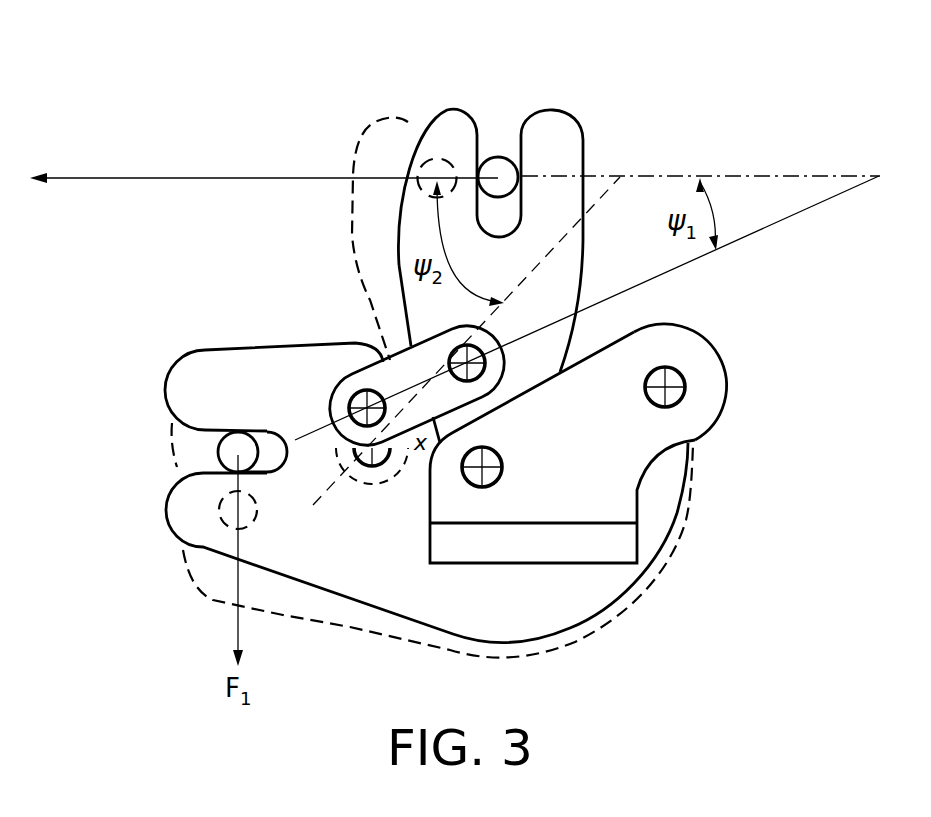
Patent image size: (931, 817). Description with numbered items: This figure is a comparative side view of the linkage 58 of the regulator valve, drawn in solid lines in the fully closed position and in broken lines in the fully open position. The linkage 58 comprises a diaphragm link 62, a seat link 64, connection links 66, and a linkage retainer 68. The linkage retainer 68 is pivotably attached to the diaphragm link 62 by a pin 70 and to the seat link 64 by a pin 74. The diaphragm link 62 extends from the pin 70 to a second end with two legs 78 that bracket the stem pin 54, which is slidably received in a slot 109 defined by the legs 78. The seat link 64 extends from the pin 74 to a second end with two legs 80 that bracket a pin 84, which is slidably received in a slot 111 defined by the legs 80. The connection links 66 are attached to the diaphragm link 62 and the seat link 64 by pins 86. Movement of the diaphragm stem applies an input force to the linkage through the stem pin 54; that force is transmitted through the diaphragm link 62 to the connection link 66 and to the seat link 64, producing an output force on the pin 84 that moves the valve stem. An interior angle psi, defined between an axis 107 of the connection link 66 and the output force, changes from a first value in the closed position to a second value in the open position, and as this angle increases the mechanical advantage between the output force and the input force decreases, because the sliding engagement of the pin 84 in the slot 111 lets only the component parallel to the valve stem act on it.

The stem pin 54 is at (218, 450).
The linkage 58 is at (267, 159).
The diaphragm link 62 is at (191, 351).
The seat link 64 is at (398, 242).
The connection link 66 is at (332, 410).
The linkage retainer 68 is at (727, 392).
The pin 70 is at (688, 382).
The pin 74 is at (503, 466).
The legs 78 is at (170, 372).
The legs 80 is at (448, 110).
The pin 84 is at (497, 157).
The pins 86 is at (452, 348).
The axis of connection link 107 is at (790, 216).
The slot 109 is at (160, 478).
The slot 111 is at (530, 95).